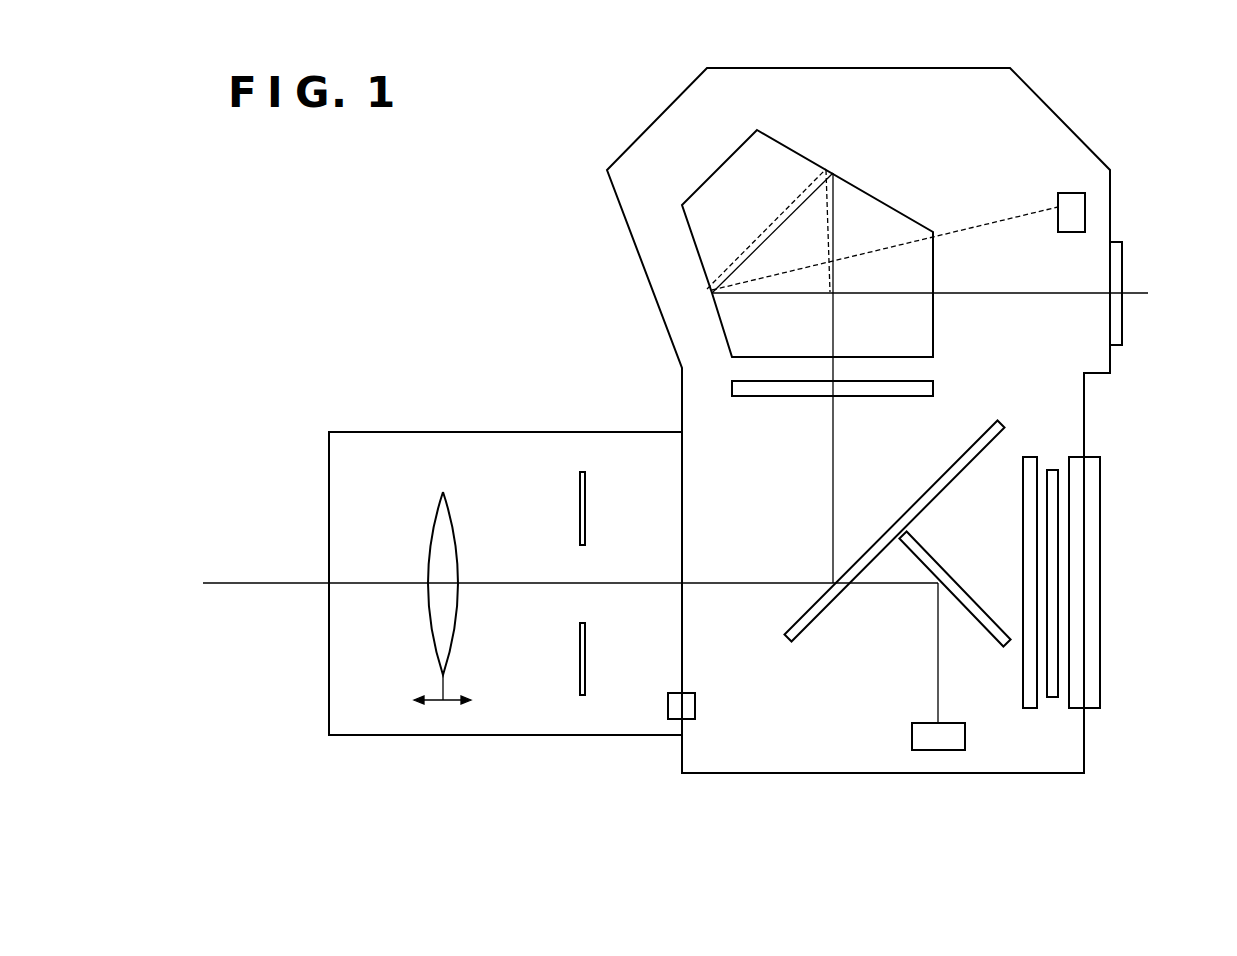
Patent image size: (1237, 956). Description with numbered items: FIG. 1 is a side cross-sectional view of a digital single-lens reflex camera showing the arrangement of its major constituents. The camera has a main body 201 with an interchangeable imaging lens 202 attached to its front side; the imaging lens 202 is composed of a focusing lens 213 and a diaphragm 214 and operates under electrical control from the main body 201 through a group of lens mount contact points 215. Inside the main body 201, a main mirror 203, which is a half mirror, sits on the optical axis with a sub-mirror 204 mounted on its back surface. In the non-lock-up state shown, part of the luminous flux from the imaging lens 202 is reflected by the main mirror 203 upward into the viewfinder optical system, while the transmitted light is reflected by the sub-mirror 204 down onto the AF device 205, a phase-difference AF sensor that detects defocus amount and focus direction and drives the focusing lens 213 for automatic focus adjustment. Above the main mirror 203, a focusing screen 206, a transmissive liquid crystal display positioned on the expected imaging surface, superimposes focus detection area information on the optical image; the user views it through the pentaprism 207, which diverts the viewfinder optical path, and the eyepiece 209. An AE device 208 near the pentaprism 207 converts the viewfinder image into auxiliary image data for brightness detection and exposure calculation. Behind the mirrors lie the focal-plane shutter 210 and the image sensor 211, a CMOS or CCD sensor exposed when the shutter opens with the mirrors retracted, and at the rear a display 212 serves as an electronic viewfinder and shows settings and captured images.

The main body 201 is at (730, 68).
The imaging lens 202 is at (458, 432).
The main mirror 203 is at (783, 645).
The sub-mirror 204 is at (950, 575).
The AF device 205 is at (937, 752).
The focusing screen 206 is at (793, 397).
The pentaprism 207 is at (800, 154).
The AE device 208 is at (1072, 193).
The eyepiece 209 is at (1123, 246).
The focal-plane shutter 210 is at (1032, 710).
The image sensor 211 is at (1052, 698).
The display 212 is at (1092, 710).
The focusing lens 213 is at (470, 493).
The diaphragm 214 is at (583, 697).
The group of lens mount contact points 215 is at (672, 722).